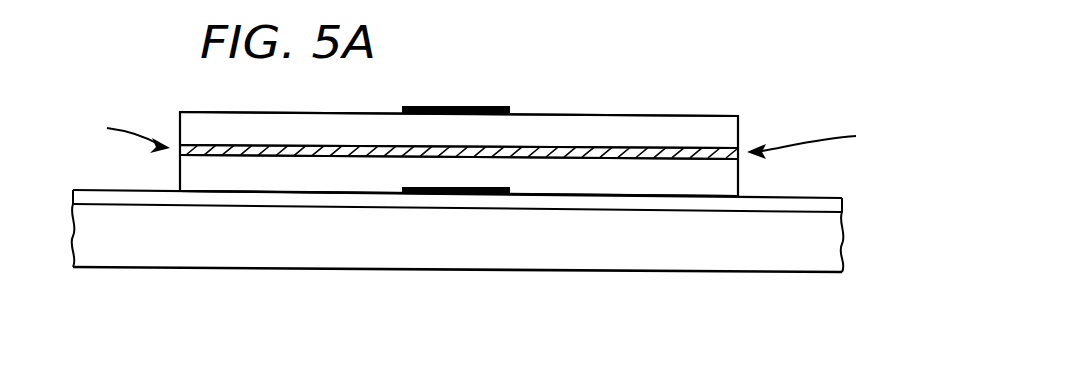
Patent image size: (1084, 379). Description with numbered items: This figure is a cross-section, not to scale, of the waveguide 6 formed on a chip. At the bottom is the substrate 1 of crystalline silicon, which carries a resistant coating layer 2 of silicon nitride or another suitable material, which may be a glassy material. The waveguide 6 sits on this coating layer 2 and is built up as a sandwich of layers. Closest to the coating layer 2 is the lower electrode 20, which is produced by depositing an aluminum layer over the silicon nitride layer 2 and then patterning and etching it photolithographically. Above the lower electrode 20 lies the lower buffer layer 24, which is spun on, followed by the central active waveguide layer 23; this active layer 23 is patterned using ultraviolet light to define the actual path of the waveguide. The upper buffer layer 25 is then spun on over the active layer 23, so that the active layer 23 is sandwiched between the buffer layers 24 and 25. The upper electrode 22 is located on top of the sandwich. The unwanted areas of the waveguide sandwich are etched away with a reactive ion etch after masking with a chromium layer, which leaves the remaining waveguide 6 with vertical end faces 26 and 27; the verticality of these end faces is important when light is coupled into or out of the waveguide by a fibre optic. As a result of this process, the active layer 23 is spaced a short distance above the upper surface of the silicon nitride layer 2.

The substrate 1 is at (298, 256).
The resistant coating layer 2 is at (157, 197).
The waveguide 6 is at (252, 111).
The lower electrode 20 is at (470, 194).
The upper electrode 22 is at (457, 107).
The active waveguide layer 23 is at (720, 149).
The lower buffer layer 24 is at (723, 179).
The upper buffer layer 25 is at (676, 128).
The vertical end face 26 is at (821, 135).
The vertical end face 27 is at (118, 130).